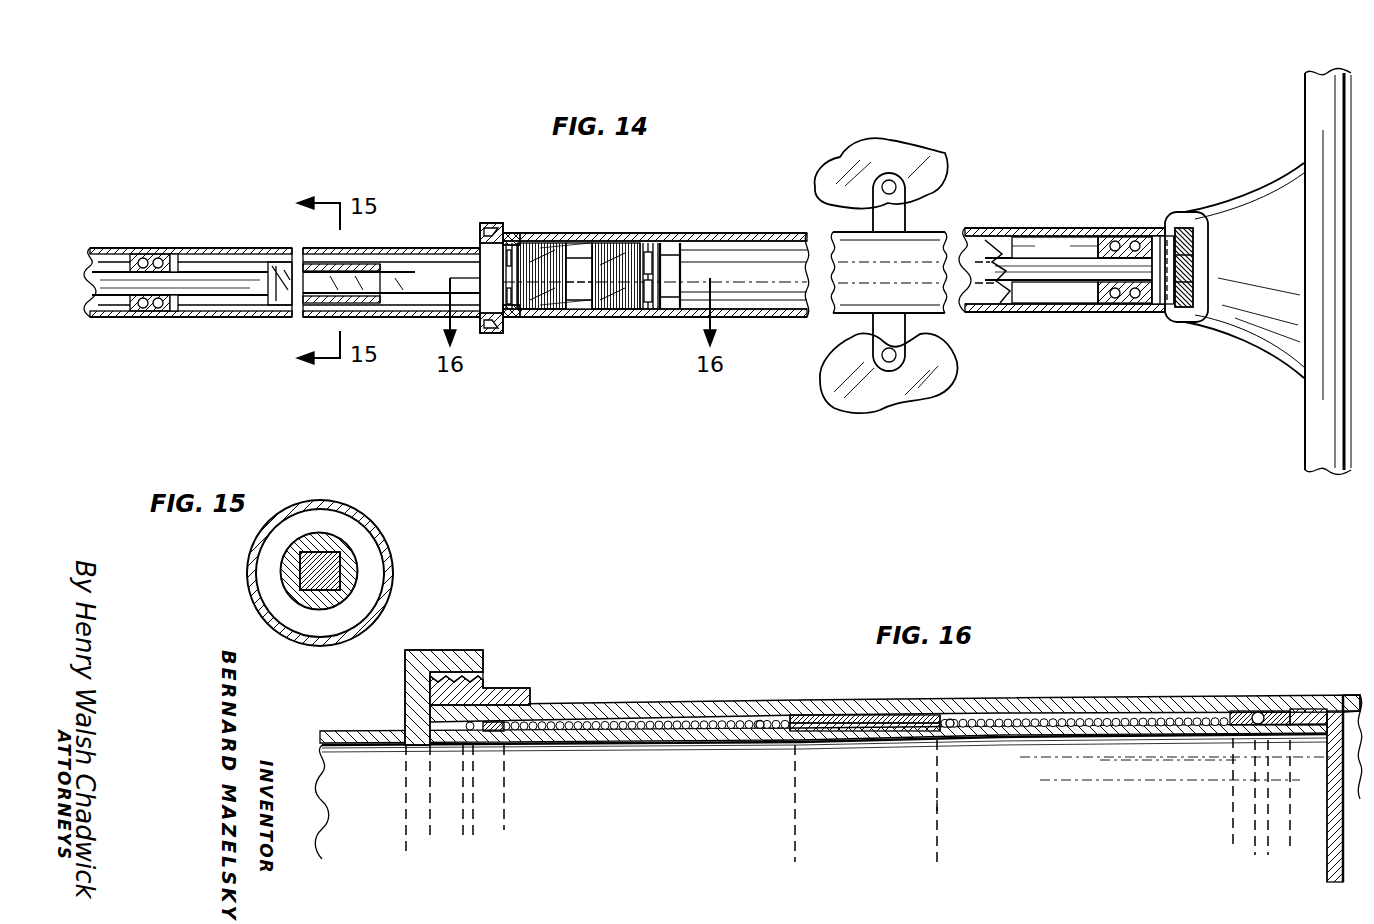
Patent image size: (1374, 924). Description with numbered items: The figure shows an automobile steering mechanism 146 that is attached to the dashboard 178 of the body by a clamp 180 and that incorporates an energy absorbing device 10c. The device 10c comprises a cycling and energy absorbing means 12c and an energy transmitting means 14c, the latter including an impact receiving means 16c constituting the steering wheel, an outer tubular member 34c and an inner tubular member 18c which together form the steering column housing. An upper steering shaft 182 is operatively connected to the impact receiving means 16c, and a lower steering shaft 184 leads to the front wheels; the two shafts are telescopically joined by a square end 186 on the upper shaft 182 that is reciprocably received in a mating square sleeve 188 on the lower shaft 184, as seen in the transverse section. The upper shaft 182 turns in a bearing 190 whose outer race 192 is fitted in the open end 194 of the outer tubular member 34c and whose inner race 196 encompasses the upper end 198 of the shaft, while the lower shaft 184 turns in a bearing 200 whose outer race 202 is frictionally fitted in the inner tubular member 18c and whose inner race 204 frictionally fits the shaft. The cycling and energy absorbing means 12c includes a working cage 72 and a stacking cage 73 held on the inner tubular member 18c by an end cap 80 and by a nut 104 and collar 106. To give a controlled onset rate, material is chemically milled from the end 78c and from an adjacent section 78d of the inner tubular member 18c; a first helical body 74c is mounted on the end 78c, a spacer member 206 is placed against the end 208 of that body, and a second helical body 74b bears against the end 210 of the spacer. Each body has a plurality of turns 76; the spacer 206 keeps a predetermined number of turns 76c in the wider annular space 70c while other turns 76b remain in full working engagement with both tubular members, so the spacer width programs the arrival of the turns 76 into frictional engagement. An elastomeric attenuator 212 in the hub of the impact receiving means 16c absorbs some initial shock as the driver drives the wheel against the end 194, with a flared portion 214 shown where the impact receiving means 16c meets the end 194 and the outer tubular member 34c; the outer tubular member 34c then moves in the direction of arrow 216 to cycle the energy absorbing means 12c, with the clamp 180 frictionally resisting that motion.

In FIG. 14, the energy absorbing device 10c is at (575, 326).
In FIG. 14, the cycling and energy absorbing means 12c is at (543, 304).
In FIG. 14, the energy transmitting means 14c is at (758, 334).
In FIG. 14, the impact receiving means 16c is at (1312, 393).
In FIG. 14, the inner tubular member 18c is at (243, 318).
In FIG. 15, the inner tubular member 18c is at (375, 540).
In FIG. 16, the inner tubular member 18c is at (678, 738).
In FIG. 16, the outer tubular member 34c is at (692, 705).
In FIG. 16, the annular space 70c is at (1211, 712).
In FIG. 14, the working cage 72 is at (663, 240).
In FIG. 14, the stacking cage 73 is at (538, 258).
In FIG. 16, the stacking cage 73 is at (506, 799).
In FIG. 16, the second helical body 74b is at (765, 713).
In FIG. 14, the first helical body 74c is at (614, 240).
In FIG. 16, the first helical body 74c is at (1127, 677).
In FIG. 14, the turns 76 is at (560, 243).
In FIG. 16, the turns 76 is at (600, 720).
In FIG. 16, the turns 76b is at (757, 730).
In FIG. 16, the turns 76c is at (976, 730).
In FIG. 16, the end 78c is at (1301, 722).
In FIG. 16, the section 78d is at (897, 740).
In FIG. 14, the end cap 80 is at (694, 235).
In FIG. 16, the end cap 80 is at (1337, 774).
In FIG. 14, the nut 104 is at (491, 216).
In FIG. 16, the nut 104 is at (471, 648).
In FIG. 14, the collar 106 is at (513, 236).
In FIG. 16, the collar 106 is at (513, 694).
In FIG. 14, the steering mechanism 146 is at (524, 384).
In FIG. 14, the dashboard 178 is at (927, 154).
In FIG. 14, the clamp 180 is at (894, 218).
In FIG. 16, the clamp 180 is at (940, 810).
In FIG. 14, the upper steering shaft 182 is at (1022, 275).
In FIG. 14, the lower steering shaft 184 is at (119, 297).
In FIG. 15, the lower steering shaft 184 is at (334, 607).
In FIG. 14, the square end 186 is at (391, 302).
In FIG. 15, the square end 186 is at (338, 571).
In FIG. 14, the square sleeve 188 is at (284, 320).
In FIG. 15, the square sleeve 188 is at (340, 581).
In FIG. 14, the bearing 190 is at (1113, 236).
In FIG. 14, the outer race 192 is at (1140, 229).
In FIG. 14, the open end 194 is at (1158, 312).
In FIG. 14, the inner race 196 is at (1093, 289).
In FIG. 14, the upper end 198 is at (1092, 250).
In FIG. 14, the bearing 200 is at (190, 257).
In FIG. 14, the outer race 202 is at (135, 240).
In FIG. 14, the inner race 204 is at (176, 312).
In FIG. 14, the spacer member 206 is at (584, 238).
In FIG. 16, the spacer member 206 is at (873, 706).
In FIG. 16, the end 208 is at (932, 708).
In FIG. 16, the end 210 is at (810, 742).
In FIG. 14, the elastomeric attenuator 212 is at (1194, 262).
In FIG. 14, the bell housing 214 is at (1227, 201).
In FIG. 14, the arrow 216 is at (1060, 363).